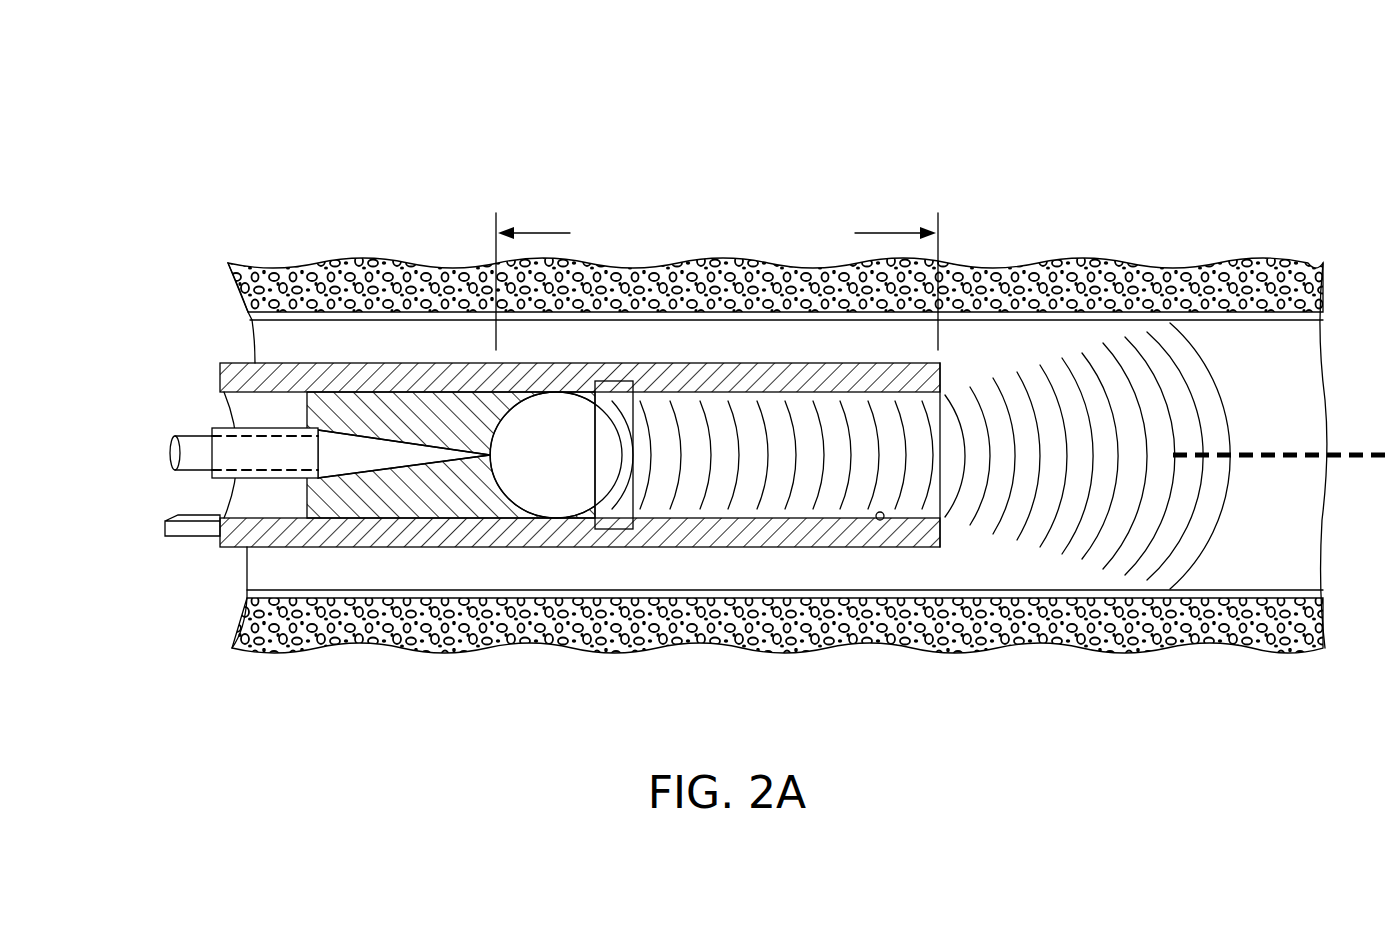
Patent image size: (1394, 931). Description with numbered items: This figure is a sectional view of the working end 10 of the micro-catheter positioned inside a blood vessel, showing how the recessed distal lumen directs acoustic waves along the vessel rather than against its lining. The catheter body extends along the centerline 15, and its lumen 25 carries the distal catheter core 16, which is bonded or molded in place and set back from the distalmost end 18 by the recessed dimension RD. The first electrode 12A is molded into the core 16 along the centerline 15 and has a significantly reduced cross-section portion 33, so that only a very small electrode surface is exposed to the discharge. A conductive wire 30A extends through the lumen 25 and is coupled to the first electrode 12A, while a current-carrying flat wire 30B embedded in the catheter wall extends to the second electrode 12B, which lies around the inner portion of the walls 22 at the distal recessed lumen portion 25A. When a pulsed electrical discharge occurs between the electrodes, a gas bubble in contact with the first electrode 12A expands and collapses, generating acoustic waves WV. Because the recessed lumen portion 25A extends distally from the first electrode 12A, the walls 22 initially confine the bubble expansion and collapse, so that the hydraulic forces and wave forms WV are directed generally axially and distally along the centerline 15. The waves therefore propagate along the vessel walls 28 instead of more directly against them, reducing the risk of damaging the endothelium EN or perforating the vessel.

The working end 10 is at (380, 98).
The first electrode 12A is at (475, 445).
The second electrode 12B is at (600, 530).
The centerline 15 is at (1343, 453).
The distal catheter core 16 is at (340, 510).
The distalmost end 18 is at (940, 548).
The walls 22 is at (878, 520).
The lumen 25 is at (246, 412).
The distal recessed lumen portion 25A is at (711, 508).
The vessel walls 28 is at (1285, 276).
The conductive wire 30A is at (181, 466).
The flat wire 30B is at (180, 540).
The reduced cross-section portion 33 is at (398, 448).
The recessed dimension RD is at (873, 233).
The acoustic waves WV is at (1080, 352).
The endothelium EN is at (1195, 318).